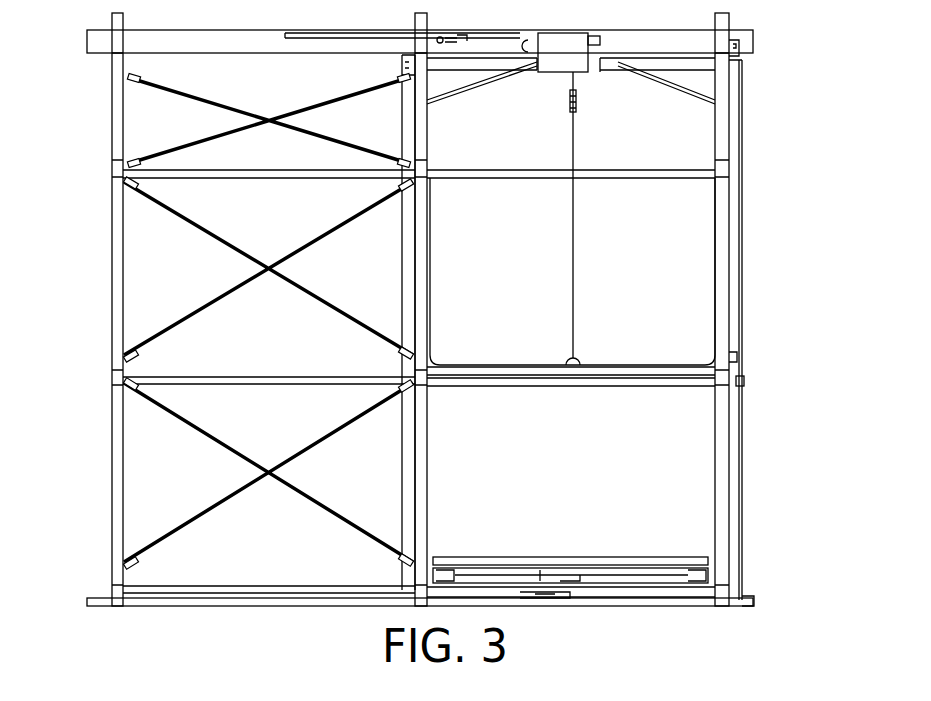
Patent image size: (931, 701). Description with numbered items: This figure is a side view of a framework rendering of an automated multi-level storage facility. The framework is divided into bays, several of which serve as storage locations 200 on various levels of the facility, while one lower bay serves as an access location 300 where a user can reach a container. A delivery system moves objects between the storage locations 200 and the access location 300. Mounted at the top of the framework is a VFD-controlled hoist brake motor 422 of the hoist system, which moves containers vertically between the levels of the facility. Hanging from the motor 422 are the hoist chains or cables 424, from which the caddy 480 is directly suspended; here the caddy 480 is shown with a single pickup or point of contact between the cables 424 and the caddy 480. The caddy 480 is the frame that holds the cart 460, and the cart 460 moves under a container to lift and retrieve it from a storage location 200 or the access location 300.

The storage location 200 is at (170, 274).
The access location 300 is at (655, 473).
The hoist brake motor 422 is at (568, 62).
The hoist chains or cables 424 is at (571, 153).
The caddy 480 is at (469, 362).
The cart 460 is at (469, 557).